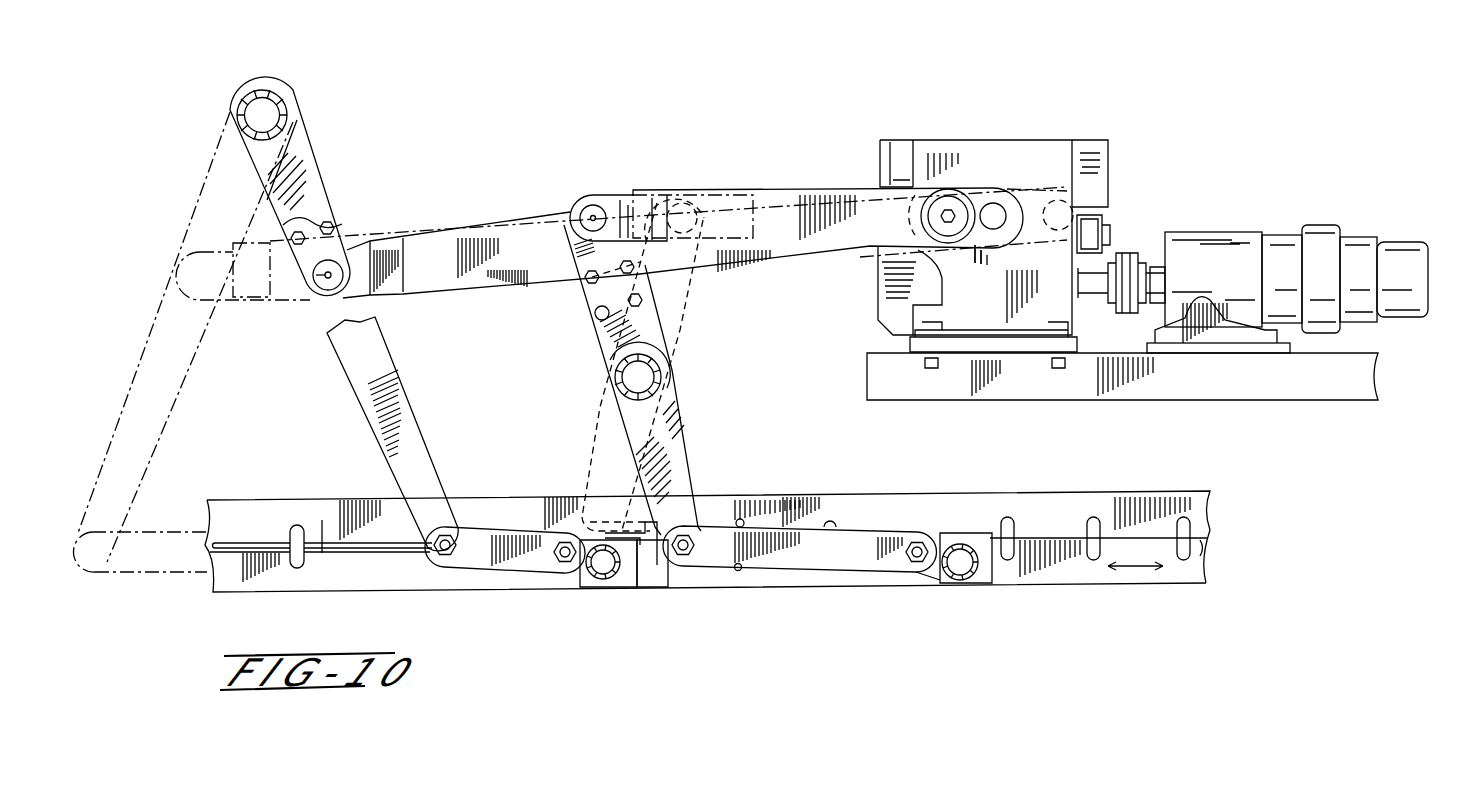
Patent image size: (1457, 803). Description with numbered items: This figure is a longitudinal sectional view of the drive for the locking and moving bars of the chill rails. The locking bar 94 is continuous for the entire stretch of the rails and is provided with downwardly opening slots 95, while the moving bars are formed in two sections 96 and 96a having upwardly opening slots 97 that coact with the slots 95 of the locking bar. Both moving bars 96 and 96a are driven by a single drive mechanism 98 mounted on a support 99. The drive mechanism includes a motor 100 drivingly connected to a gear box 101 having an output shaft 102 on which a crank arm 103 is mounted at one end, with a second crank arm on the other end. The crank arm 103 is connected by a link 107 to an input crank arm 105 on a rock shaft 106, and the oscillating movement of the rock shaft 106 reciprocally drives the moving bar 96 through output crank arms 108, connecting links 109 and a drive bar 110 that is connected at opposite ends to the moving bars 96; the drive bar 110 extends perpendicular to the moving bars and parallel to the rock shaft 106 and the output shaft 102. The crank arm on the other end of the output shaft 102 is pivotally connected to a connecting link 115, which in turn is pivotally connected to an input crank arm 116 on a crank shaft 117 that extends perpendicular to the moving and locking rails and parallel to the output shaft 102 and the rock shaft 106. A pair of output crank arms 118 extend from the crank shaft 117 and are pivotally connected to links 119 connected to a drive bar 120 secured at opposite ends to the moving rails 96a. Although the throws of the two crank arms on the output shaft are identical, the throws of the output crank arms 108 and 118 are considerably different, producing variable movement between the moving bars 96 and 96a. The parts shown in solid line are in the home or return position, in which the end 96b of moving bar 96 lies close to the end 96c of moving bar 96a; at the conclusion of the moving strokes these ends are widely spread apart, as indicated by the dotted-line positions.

The locking bar 94 is at (965, 512).
The downwardly opening slots 95 is at (1105, 517).
The moving bar 96 is at (762, 573).
The moving bar 96a is at (228, 590).
The end of moving bar 96b is at (638, 590).
The end of moving bar 96c is at (322, 553).
The upwardly opening slots 97 is at (1210, 550).
The drive mechanism 98 is at (1040, 133).
The support 99 is at (1220, 377).
The motor 100 is at (1230, 240).
The gear box 101 is at (967, 153).
The output shaft 102 is at (997, 222).
The crank arm 103 is at (973, 240).
The input crank arm 105 is at (593, 297).
The rock shaft 106 is at (612, 378).
The link 107 is at (790, 232).
The output crank arms 108 is at (683, 467).
The connecting links 109 is at (817, 553).
The drive bar 110 is at (953, 577).
The connecting link 115 is at (465, 290).
The input crank arm 116 is at (308, 232).
The crank shaft 117 is at (273, 88).
The output crank arms 118 is at (375, 415).
The links 119 is at (516, 573).
The drive bar 120 is at (597, 587).